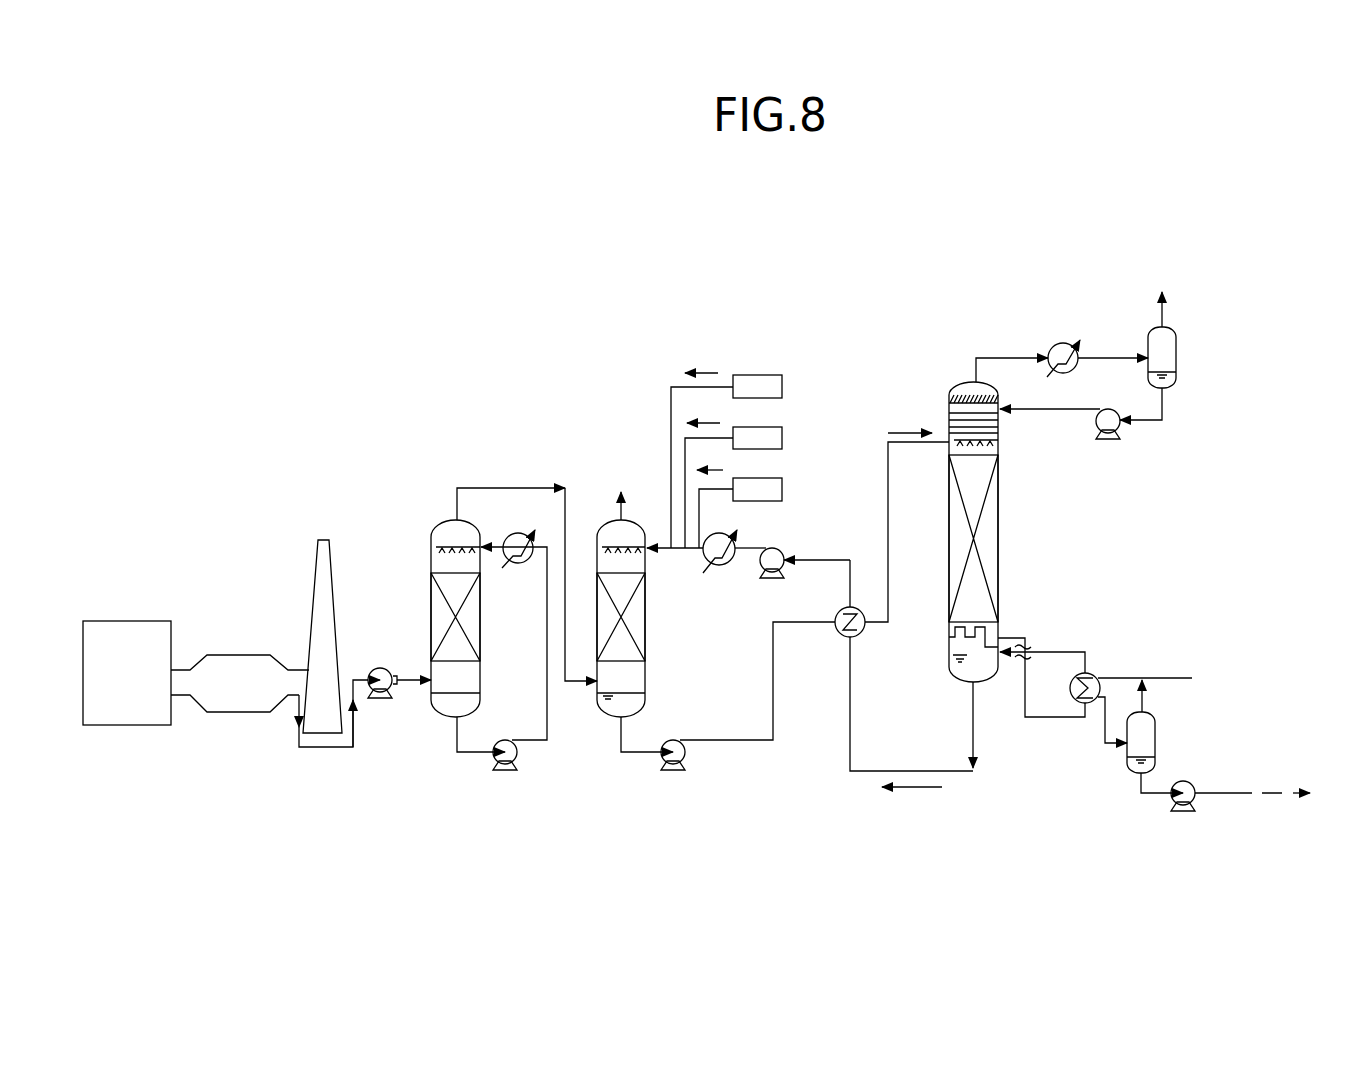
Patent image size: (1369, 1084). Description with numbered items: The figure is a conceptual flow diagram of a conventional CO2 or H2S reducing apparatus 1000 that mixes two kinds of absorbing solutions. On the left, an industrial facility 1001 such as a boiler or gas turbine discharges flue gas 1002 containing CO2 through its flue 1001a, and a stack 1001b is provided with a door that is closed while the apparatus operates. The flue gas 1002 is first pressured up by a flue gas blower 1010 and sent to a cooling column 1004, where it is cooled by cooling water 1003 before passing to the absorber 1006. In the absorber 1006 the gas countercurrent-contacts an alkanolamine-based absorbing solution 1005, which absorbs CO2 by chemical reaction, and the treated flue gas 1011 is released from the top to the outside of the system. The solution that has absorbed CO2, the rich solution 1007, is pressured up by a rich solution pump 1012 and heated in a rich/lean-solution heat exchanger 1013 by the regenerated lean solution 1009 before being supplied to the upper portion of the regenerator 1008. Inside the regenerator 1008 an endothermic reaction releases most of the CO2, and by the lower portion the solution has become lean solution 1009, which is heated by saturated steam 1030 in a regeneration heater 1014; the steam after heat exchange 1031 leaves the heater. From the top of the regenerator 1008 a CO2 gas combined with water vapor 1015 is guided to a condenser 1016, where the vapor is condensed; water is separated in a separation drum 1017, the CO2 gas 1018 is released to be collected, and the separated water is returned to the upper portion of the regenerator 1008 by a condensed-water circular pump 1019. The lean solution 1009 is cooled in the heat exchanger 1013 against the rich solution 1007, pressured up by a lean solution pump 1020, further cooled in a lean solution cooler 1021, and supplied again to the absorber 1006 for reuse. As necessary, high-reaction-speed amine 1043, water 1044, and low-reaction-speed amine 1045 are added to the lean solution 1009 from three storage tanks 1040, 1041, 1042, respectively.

The CO2 or H2S reducing apparatus 1000 is at (598, 228).
The industrial facility 1001 is at (149, 621).
The flue 1001a is at (198, 705).
The stack 1001b is at (314, 580).
The flue gas 1002 is at (468, 487).
The flue gas blower 1010 is at (384, 700).
The cooling column 1004 is at (432, 527).
The cooling water 1003 is at (488, 552).
The absorber 1006 is at (598, 527).
The flue gas from which CO2 has been reduced 1011 is at (616, 515).
The absorbing solution 1005 is at (660, 545).
The rich solution pump 1012 is at (672, 772).
The lean solution cooler 1021 is at (722, 568).
The storage tank 1040 is at (782, 491).
The storage tank 1041 is at (782, 438).
The storage tank 1042 is at (782, 388).
The high-reaction-speed amine 1043 is at (712, 466).
The water 1044 is at (707, 418).
The low-reaction-speed amine 1045 is at (708, 372).
The lean solution pump 1020 is at (780, 548).
The rich/lean-solution heat exchanger 1013 is at (843, 637).
The rich solution 1007 is at (903, 430).
The lean solution 1009 is at (915, 790).
The regenerator 1008 is at (960, 380).
The CO2 gas combined with water vapor 1015 is at (997, 357).
The condenser 1016 is at (1058, 347).
The separation drum 1017 is at (1176, 359).
The CO2 gas 1018 is at (1191, 305).
The condensed-water circular pump 1019 is at (1122, 430).
The regeneration heater 1014 is at (1090, 673).
The saturated steam 1030 is at (1170, 689).
The steam after heat exchange 1031 is at (1252, 792).